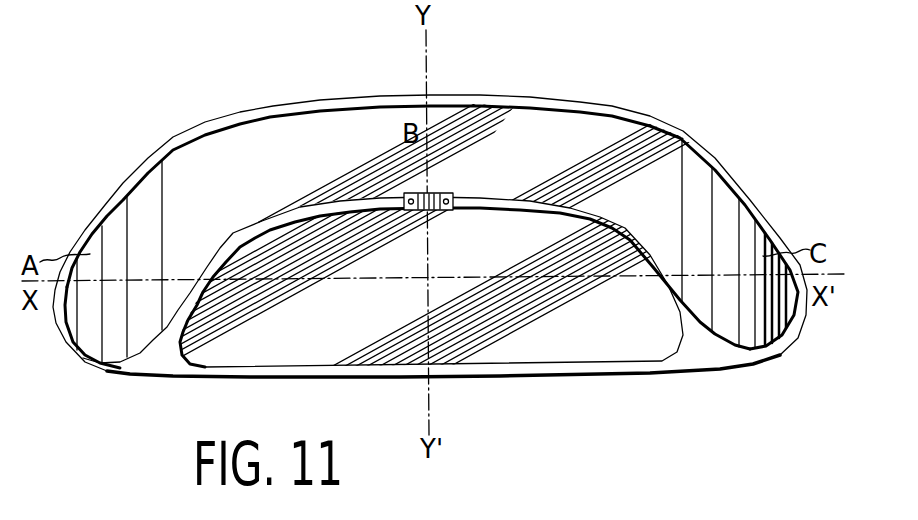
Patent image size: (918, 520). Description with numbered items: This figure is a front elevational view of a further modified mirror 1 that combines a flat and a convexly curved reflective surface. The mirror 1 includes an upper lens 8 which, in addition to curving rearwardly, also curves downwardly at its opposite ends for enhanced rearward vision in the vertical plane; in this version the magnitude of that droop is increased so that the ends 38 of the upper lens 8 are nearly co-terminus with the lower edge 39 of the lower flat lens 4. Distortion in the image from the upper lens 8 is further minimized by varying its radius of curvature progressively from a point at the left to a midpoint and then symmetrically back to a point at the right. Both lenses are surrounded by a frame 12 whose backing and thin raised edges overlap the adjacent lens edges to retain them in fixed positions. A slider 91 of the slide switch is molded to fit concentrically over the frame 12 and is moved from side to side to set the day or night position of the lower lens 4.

The mirror 1 is at (478, 74).
The lens 4 is at (273, 358).
The upper lens 8 is at (182, 165).
The frame 12 is at (692, 337).
The ends 38 is at (115, 355).
The lower edge 39 is at (533, 377).
The slider 91 is at (409, 192).